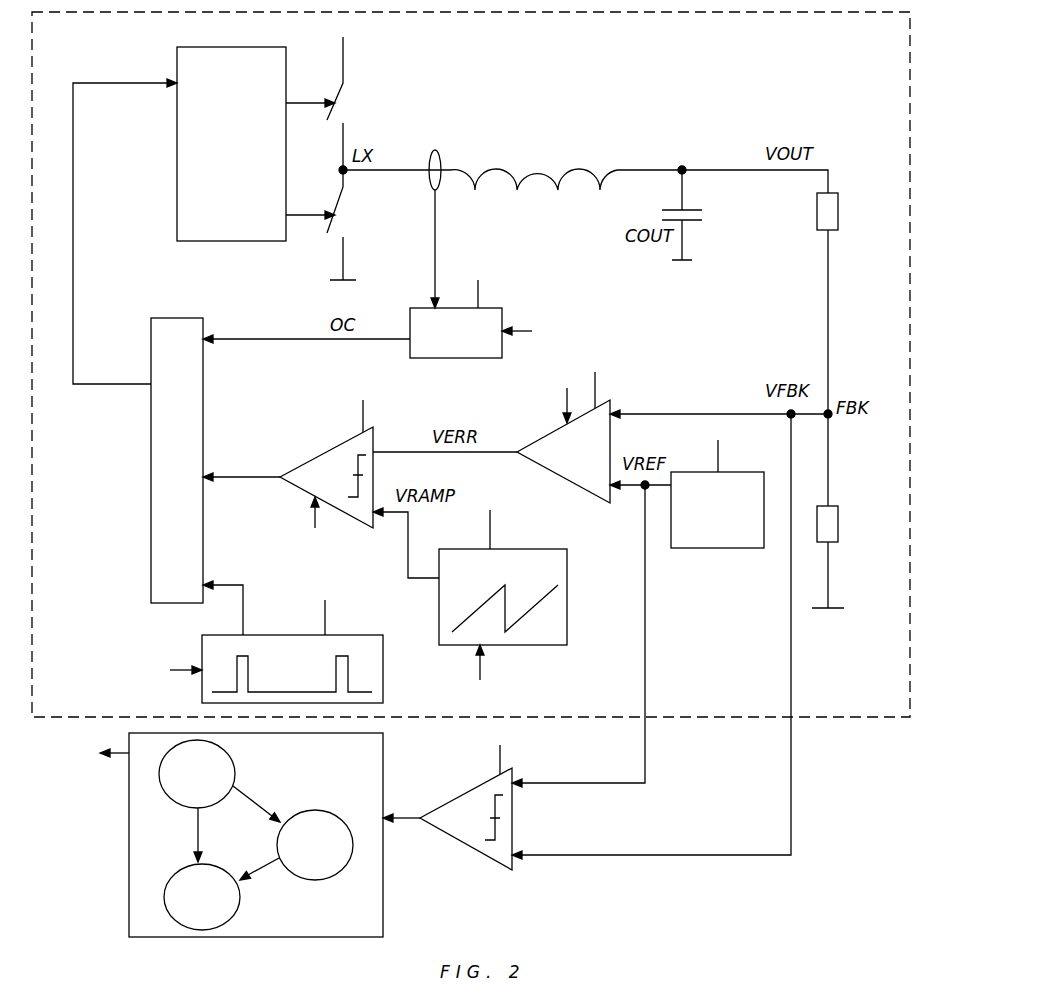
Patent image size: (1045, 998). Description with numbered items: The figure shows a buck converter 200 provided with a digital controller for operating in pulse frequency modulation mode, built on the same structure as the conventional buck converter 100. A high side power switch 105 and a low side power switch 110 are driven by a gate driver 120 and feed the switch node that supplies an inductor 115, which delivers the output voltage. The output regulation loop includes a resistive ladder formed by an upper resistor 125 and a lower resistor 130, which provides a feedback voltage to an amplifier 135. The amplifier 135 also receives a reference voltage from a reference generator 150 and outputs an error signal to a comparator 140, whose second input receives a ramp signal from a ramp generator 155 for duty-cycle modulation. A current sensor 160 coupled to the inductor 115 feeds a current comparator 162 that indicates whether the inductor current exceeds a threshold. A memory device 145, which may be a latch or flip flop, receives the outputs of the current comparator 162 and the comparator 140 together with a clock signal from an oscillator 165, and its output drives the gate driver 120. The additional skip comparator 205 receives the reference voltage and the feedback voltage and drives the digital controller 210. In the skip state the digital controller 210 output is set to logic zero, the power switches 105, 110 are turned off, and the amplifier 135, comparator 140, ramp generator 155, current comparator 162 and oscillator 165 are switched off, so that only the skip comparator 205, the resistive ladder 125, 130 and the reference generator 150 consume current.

The buck converter 100 is at (914, 90).
The high side power switch 105 is at (360, 92).
The low side power switch 110 is at (352, 233).
The inductor 115 is at (552, 165).
The gate driver 120 is at (250, 47).
The resistor ROH 125 is at (838, 197).
The resistor ROL 130 is at (838, 510).
The amplifier 135 is at (527, 446).
The comparator 140 is at (327, 455).
The memory device 145 is at (190, 318).
The reference generator 150 is at (735, 548).
The ramp generator 155 is at (517, 645).
The current sensor 160 is at (437, 152).
The current comparator 162 is at (410, 330).
The oscillator 165 is at (202, 652).
The converter 200 is at (845, 790).
The additional comparator C2 205 is at (466, 795).
The digital controller 210 is at (129, 810).